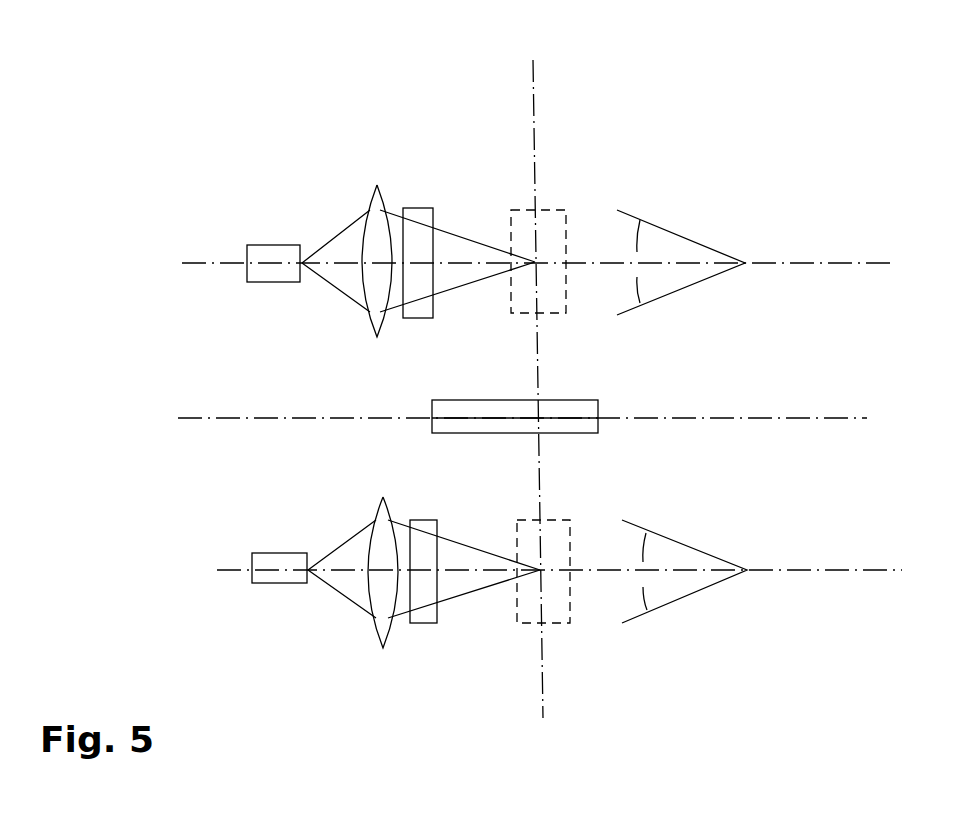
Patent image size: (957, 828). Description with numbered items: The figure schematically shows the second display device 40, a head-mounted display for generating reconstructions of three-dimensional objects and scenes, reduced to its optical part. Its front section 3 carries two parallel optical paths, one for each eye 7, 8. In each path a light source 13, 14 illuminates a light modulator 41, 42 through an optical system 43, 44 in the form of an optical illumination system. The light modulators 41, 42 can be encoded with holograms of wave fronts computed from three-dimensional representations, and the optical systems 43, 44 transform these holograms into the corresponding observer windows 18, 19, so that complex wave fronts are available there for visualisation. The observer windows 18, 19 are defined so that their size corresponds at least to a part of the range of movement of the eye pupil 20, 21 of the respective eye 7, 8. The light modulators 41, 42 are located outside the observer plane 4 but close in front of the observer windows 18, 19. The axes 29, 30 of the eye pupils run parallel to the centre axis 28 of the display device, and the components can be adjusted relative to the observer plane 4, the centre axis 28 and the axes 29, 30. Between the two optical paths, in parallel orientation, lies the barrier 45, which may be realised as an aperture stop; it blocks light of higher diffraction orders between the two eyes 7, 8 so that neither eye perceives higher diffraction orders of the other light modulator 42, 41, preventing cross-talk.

The front section 3 is at (173, 372).
The observer plane 4 is at (535, 100).
The eye 7 is at (697, 240).
The eye 8 is at (707, 548).
The light source 13 is at (255, 245).
The light source 14 is at (255, 583).
The observer window 18 is at (553, 210).
The observer window 19 is at (568, 623).
The eye pupil 20 is at (633, 257).
The eye pupil 21 is at (638, 562).
The centre axis 28 is at (840, 418).
The axis of eye pupil 29 is at (853, 263).
The axis of eye pupil 30 is at (865, 570).
The second display device 40 is at (727, 123).
The light modulator 41 is at (420, 208).
The light modulator 42 is at (433, 623).
The optical system 43 is at (370, 200).
The optical system 44 is at (380, 637).
The barrier 45 is at (595, 402).